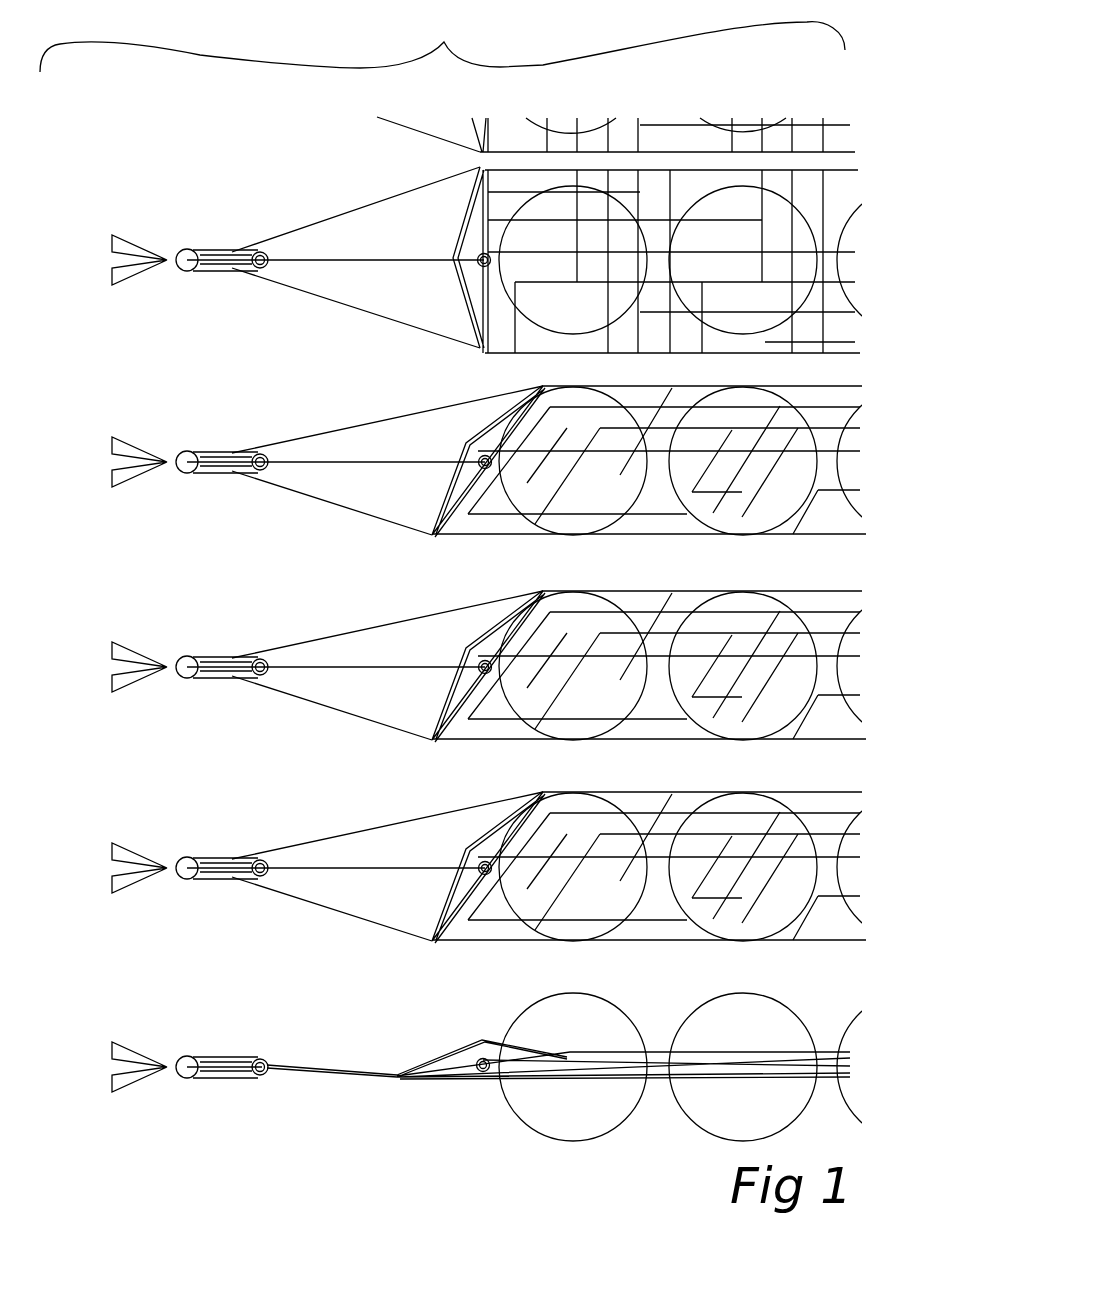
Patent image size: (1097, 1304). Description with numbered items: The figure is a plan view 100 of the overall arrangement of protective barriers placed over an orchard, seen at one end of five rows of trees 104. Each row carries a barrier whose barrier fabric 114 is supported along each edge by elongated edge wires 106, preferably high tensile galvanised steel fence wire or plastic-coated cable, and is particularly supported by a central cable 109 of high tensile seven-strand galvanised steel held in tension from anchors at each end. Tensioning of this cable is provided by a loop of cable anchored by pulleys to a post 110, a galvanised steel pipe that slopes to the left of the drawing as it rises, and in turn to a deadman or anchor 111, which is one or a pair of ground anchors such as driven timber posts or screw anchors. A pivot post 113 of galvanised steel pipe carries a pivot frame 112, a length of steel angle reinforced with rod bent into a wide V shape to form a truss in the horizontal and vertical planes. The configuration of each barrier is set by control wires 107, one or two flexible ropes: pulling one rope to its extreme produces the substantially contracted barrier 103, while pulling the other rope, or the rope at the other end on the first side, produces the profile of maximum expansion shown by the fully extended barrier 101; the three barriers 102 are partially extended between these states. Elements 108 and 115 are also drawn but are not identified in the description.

The plan view of overall arrangement 100 is at (442, 38).
The fully extended barrier 101 is at (435, 153).
The partially extended barriers 102 is at (478, 563).
The substantially contracted barrier 103 is at (593, 1052).
The rows of trees 104 is at (687, 977).
The edge wires 106 is at (775, 742).
The control wires 107 is at (423, 340).
The lower bridle line 108 is at (373, 516).
The central cable 109 is at (300, 473).
The post 110 is at (183, 473).
The deadman or anchor 111 is at (107, 487).
The pivot frame 112 is at (455, 693).
The pivot post 113 is at (468, 670).
The barrier fabric 114 is at (773, 592).
The tow line 115 is at (317, 464).